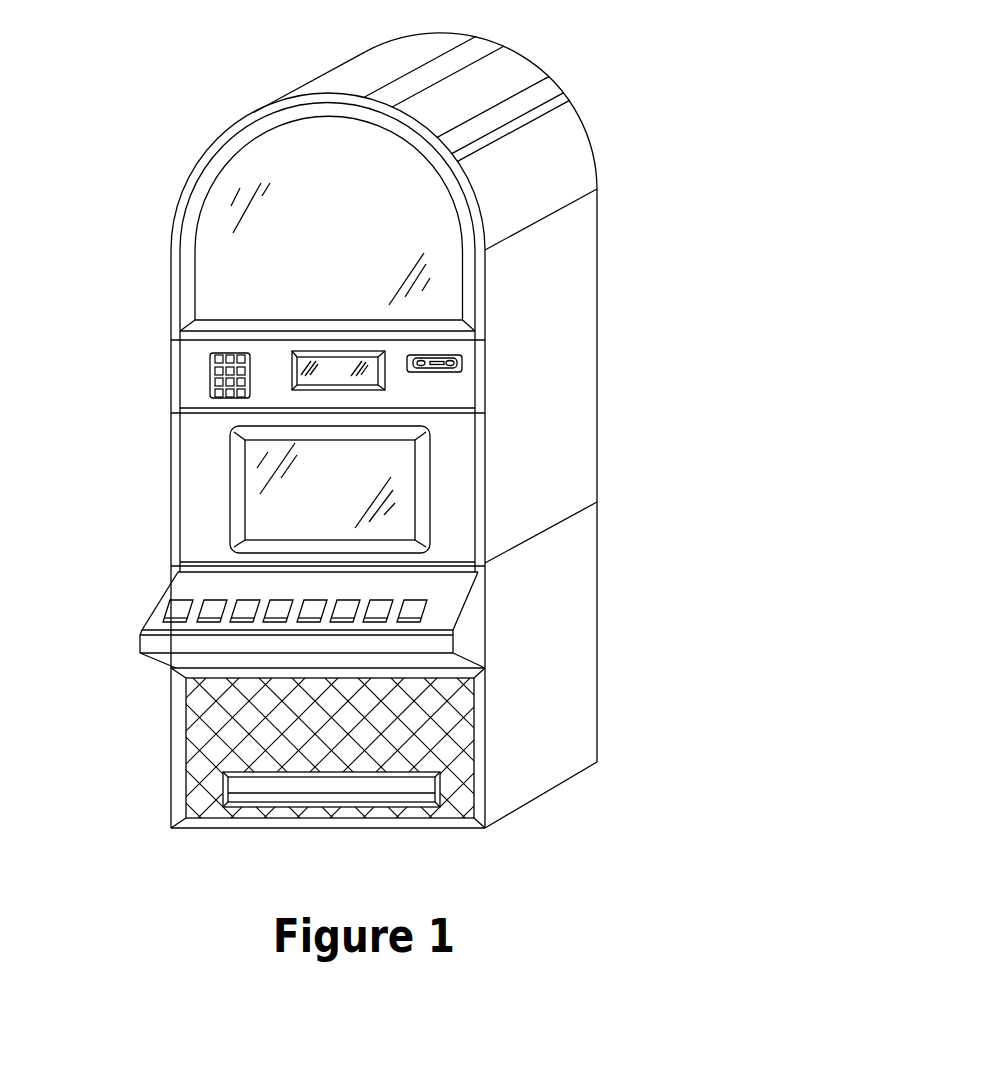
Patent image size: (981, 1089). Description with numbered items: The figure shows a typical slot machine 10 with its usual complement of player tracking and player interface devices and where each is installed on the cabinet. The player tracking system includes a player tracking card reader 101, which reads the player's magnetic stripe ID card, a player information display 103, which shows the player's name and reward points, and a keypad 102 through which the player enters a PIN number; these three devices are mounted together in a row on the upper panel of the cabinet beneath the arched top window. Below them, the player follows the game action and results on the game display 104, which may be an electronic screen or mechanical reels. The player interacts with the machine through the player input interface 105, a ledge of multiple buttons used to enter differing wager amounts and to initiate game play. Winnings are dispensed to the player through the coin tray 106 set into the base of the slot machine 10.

The slot machine 10 is at (541, 300).
The player tracking card reader 101 is at (462, 362).
The keypad 102 is at (210, 368).
The player information display 103 is at (300, 362).
The game display 104 is at (263, 515).
The player input interface 105 is at (177, 592).
The coin tray 106 is at (253, 788).